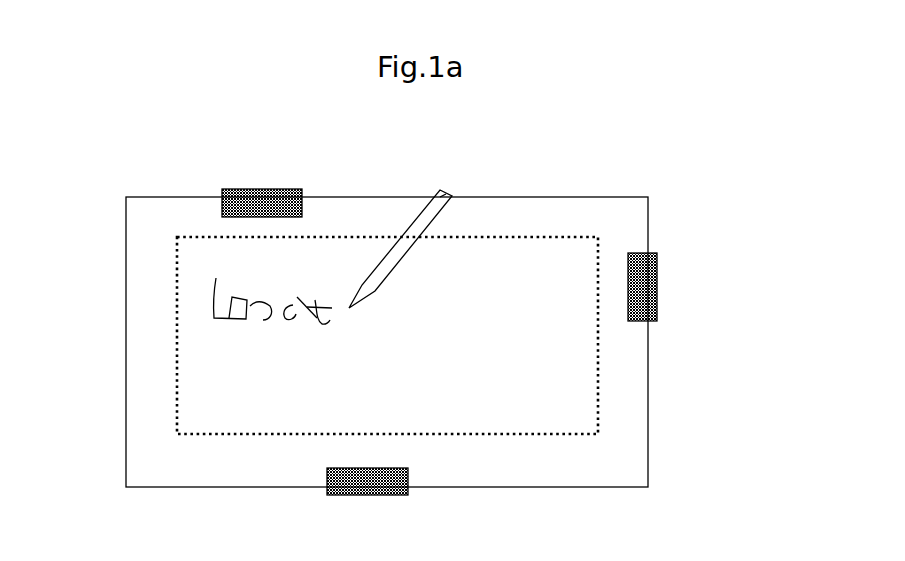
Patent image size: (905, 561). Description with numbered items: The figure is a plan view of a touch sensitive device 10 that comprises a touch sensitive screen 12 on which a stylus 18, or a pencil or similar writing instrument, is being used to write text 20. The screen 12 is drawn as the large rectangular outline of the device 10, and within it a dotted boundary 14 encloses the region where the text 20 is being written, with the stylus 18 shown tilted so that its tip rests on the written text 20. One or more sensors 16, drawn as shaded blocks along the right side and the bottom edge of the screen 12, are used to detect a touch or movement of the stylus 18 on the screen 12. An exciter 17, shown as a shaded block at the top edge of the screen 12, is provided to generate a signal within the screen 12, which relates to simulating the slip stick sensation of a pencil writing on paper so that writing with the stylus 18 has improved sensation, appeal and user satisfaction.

The touch sensitive device 10 is at (668, 160).
The touch sensitive screen 12 is at (279, 471).
The writing area boundary 14 is at (218, 438).
The sensors 16 is at (408, 484).
The exciter 17 is at (253, 202).
The stylus 18 is at (448, 197).
The text 20 is at (243, 298).